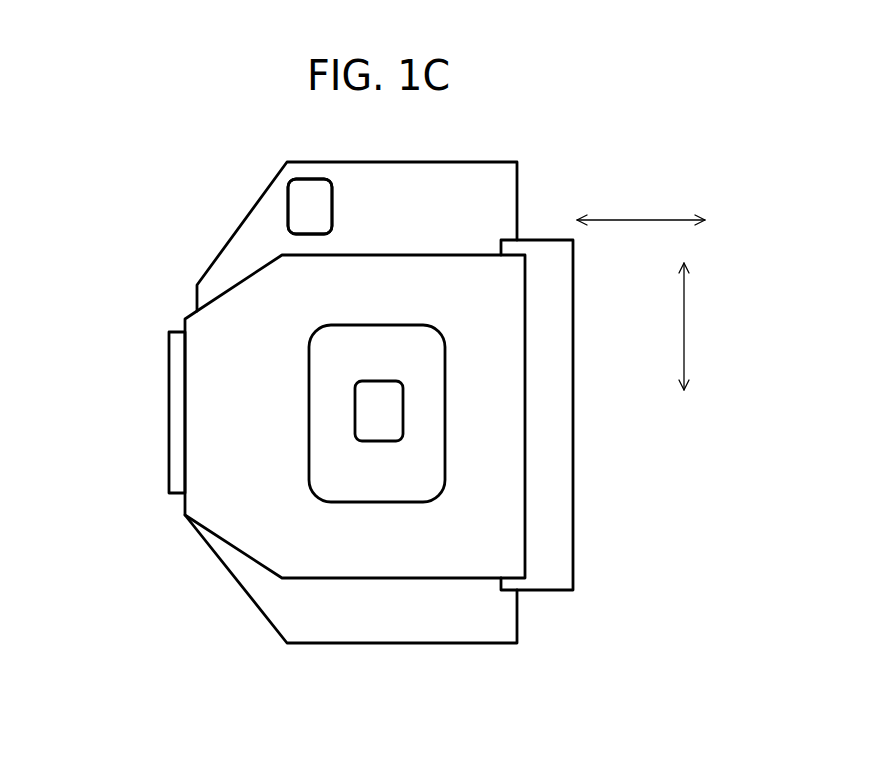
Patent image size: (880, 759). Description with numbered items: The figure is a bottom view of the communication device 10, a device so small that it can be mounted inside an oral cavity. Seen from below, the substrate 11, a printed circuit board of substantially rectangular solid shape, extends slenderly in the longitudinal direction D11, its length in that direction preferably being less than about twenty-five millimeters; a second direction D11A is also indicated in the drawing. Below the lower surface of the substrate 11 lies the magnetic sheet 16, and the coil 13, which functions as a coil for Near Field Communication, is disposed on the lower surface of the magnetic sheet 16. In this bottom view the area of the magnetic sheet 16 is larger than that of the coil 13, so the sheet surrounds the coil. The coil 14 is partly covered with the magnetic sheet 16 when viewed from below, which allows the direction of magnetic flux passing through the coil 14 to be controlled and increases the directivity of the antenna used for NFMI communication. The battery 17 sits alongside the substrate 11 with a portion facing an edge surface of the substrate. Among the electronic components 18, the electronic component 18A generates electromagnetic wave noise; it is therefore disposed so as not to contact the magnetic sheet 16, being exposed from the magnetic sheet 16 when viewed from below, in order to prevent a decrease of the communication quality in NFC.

The communication device 10 is at (110, 167).
The substrate 11 is at (312, 607).
The coil 13 is at (332, 352).
The coil 14 is at (180, 407).
The magnetic sheet 16 is at (213, 482).
The battery 17 is at (553, 472).
The electronic component 18A is at (305, 205).
The electronic components 18 is at (310, 206).
The direction D11A is at (642, 218).
The longitudinal direction D11 is at (684, 323).